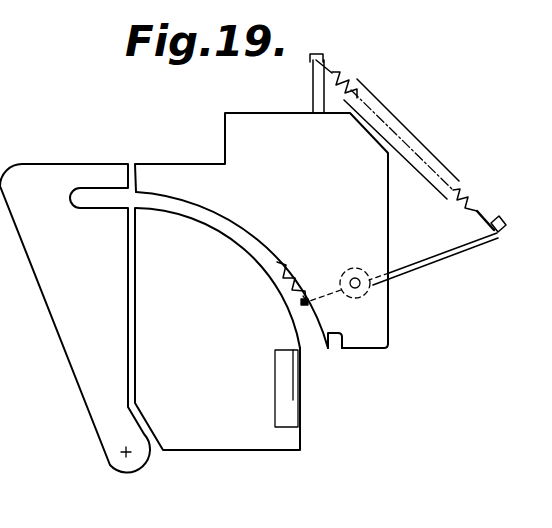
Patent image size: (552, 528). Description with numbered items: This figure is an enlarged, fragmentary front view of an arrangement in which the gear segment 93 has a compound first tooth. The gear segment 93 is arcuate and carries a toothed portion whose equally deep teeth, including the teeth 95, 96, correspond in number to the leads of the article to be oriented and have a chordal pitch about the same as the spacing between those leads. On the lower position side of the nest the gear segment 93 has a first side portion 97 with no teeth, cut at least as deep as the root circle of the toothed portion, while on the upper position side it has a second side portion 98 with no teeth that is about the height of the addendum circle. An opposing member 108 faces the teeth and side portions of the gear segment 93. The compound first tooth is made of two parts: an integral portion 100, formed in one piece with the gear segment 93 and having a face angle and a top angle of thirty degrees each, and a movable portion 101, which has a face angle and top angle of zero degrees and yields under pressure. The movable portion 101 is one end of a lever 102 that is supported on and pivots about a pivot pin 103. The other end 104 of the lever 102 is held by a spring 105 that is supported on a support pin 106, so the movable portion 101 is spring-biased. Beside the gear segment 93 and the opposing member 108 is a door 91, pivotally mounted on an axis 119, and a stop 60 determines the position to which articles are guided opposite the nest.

The stop 60 is at (294, 400).
The door 91 is at (66, 351).
The gear segment 93 is at (384, 246).
The tooth 95 is at (304, 295).
The tooth 96 is at (296, 280).
The first side portion 97 is at (343, 349).
The second side portion 98 is at (228, 202).
The integral portion 100 is at (308, 297).
The movable portion 101 is at (298, 306).
The lever 102 is at (448, 252).
The pivot pin 103 is at (362, 284).
The other end of the lever 104 is at (505, 230).
The spring 105 is at (408, 129).
The support pin 106 is at (326, 56).
The opposing member 108 is at (190, 219).
The axis 119 is at (126, 453).